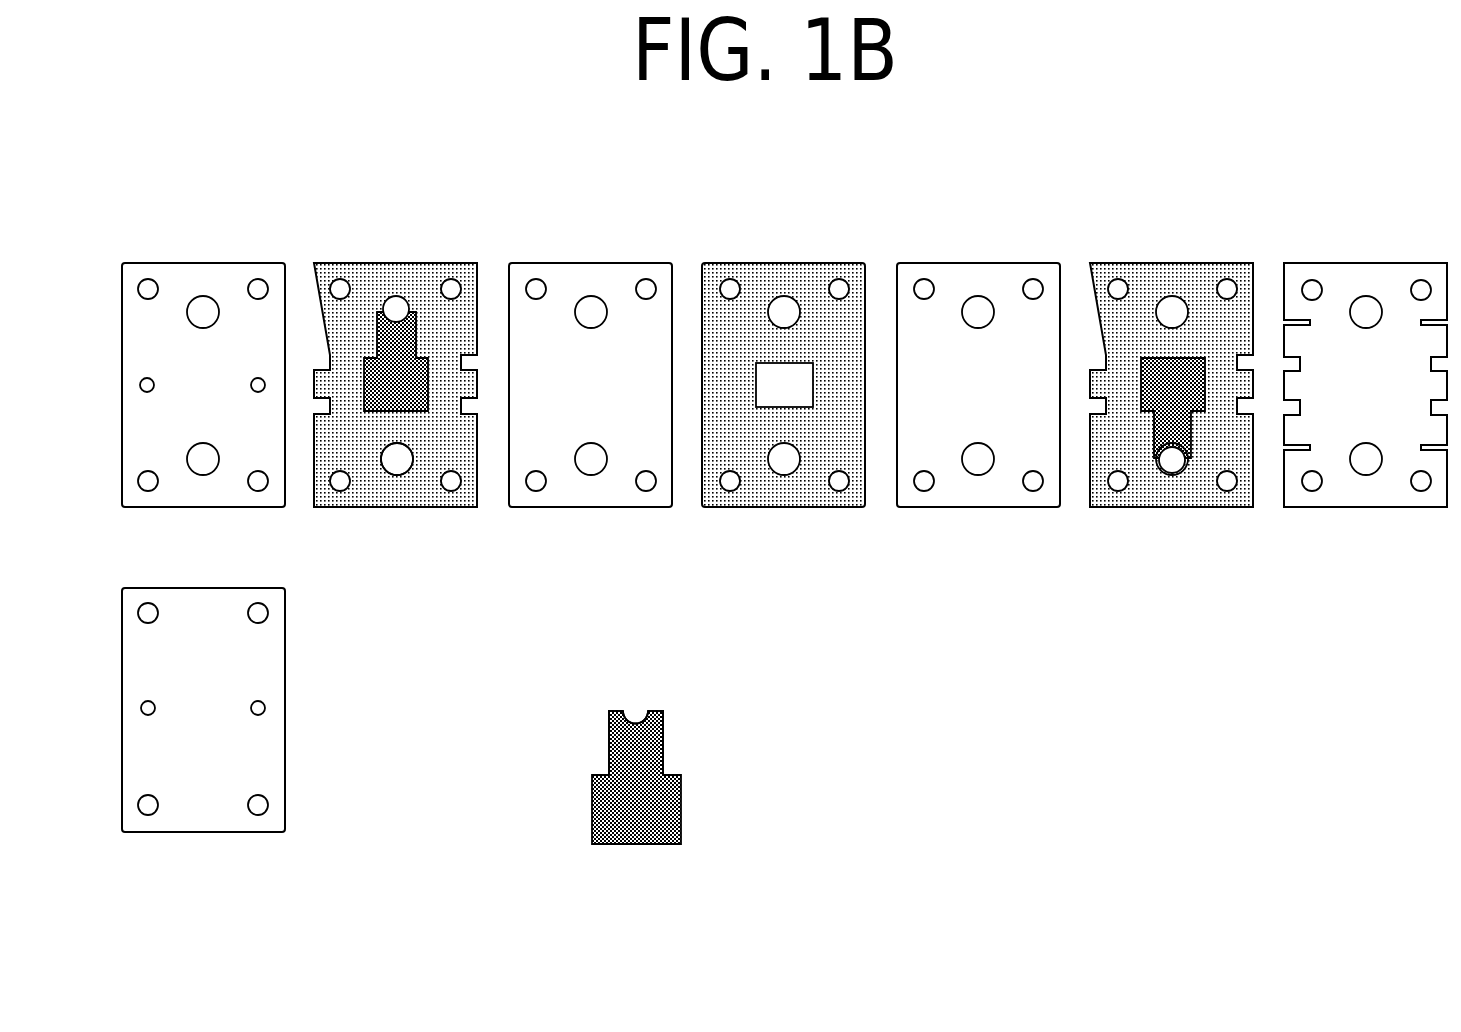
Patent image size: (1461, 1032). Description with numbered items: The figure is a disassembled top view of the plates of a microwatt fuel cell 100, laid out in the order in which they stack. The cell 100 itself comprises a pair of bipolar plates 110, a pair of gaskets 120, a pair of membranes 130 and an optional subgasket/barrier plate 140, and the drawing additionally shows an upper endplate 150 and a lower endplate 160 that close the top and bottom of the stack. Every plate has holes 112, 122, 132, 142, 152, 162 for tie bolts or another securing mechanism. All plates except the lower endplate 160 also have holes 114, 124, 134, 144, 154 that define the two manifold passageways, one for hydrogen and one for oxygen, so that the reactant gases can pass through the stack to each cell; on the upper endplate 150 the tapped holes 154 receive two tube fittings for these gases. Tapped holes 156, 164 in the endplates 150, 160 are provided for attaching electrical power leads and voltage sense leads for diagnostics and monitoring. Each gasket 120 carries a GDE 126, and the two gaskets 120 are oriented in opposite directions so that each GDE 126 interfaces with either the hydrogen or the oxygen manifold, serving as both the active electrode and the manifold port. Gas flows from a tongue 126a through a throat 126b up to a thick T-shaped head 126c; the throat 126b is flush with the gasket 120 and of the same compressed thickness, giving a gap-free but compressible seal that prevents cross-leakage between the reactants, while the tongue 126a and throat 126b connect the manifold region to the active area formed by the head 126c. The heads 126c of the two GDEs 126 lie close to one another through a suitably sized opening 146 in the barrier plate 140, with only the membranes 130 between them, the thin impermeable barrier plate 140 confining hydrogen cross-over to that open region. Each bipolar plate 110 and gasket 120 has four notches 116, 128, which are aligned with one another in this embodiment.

The microwatt fuel cell 100 is at (241, 120).
The bipolar plate 110 is at (1340, 375).
The holes for tie bolts 112 is at (1310, 492).
The manifold holes 114 is at (1364, 476).
The notches of bipolar plate 116 is at (1295, 410).
The gasket 120 is at (760, 390).
The holes for tie bolts 122 is at (339, 492).
The manifold holes 124 is at (395, 476).
The GDE 126 is at (405, 414).
The tongue 126a is at (636, 720).
The throat 126b is at (667, 750).
The head 126c is at (688, 790).
The notches of gasket 128 is at (328, 418).
The membrane 130 is at (784, 372).
The holes for tie bolts 132 is at (649, 492).
The manifold holes 134 is at (595, 477).
The subgasket/barrier plate 140 is at (795, 372).
The holes for tie bolts 142 is at (843, 492).
The manifold holes 144 is at (787, 477).
The opening 146 is at (766, 410).
The upper endplate 150 is at (202, 353).
The holes for tie bolts 152 is at (256, 279).
The tapped holes 154 is at (196, 474).
The tapped holes 156 is at (256, 392).
The lower endplate 160 is at (288, 716).
The holes for tie bolts 162 is at (268, 616).
The tapped holes 164 is at (262, 713).